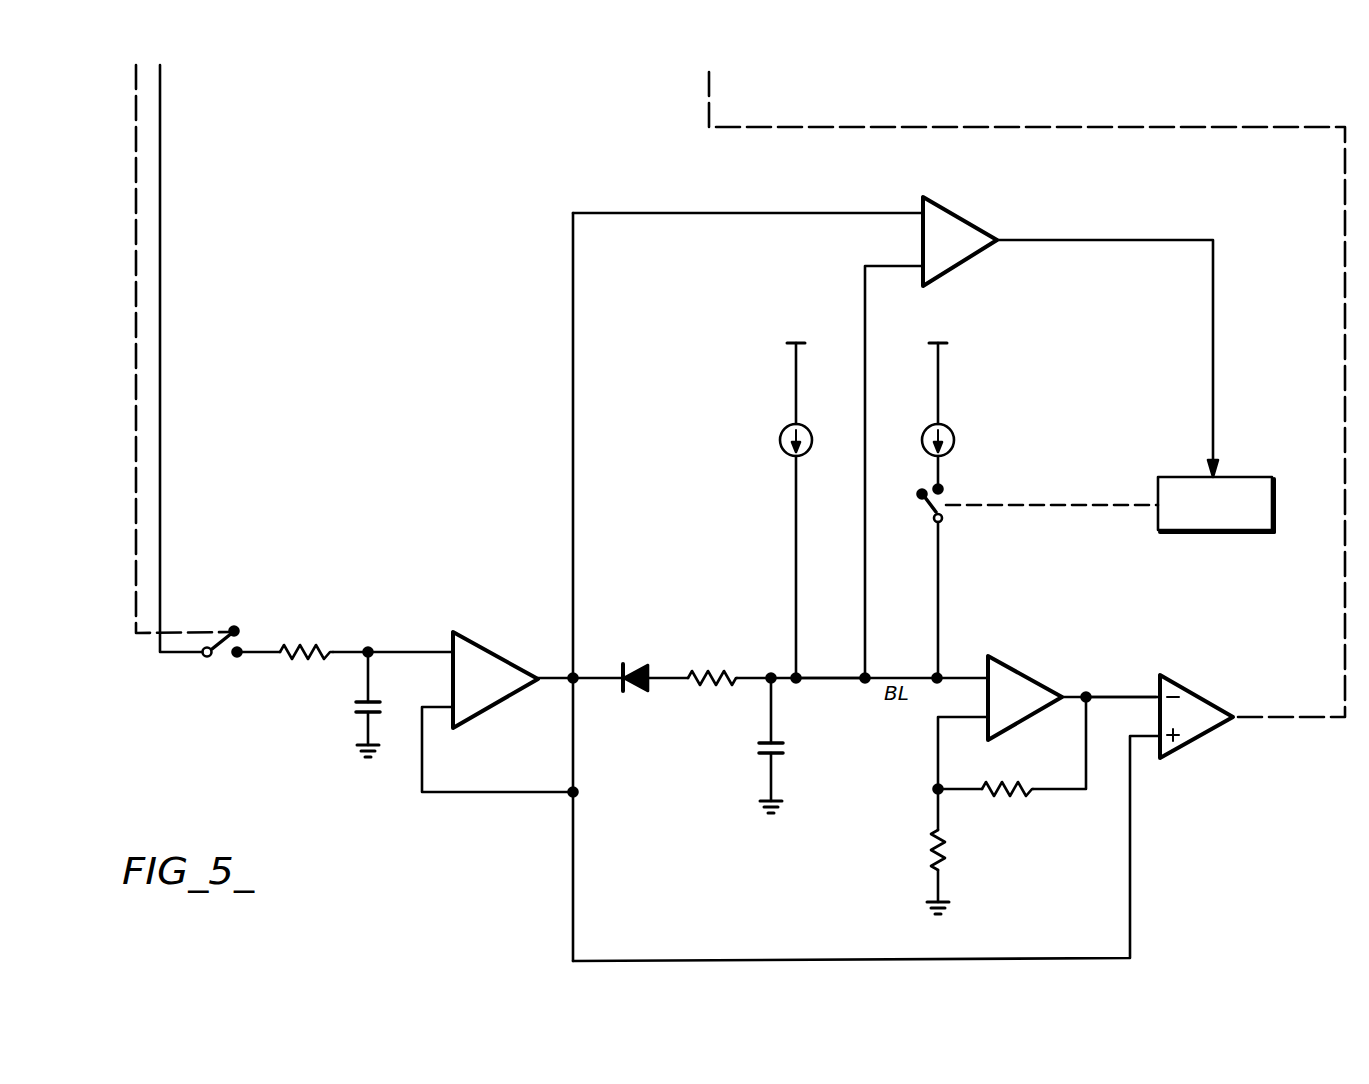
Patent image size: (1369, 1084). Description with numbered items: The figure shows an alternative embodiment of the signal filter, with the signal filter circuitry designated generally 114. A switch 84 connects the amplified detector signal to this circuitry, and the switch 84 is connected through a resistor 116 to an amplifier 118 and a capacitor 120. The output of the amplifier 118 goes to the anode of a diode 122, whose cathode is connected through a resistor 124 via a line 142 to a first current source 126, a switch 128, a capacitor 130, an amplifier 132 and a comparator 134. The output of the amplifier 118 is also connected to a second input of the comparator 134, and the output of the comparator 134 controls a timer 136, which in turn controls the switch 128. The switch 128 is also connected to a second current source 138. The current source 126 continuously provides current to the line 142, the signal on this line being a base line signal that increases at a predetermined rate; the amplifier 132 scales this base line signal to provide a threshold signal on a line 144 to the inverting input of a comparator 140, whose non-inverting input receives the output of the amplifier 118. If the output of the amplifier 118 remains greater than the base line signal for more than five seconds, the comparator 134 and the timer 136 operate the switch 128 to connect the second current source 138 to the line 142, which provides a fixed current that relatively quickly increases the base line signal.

The switch 84 is at (222, 656).
The signal filter circuitry 114 is at (398, 438).
The resistor 116 is at (308, 648).
The amplifier 118 is at (456, 632).
The capacitor 120 is at (356, 706).
The diode 122 is at (628, 666).
The resistor 124 is at (703, 674).
The first current source 126 is at (782, 428).
The switch 128 is at (945, 515).
The capacitor 130 is at (758, 746).
The amplifier 132 is at (1027, 678).
The comparator 134 is at (970, 222).
The timer 136 is at (1248, 477).
The second current source 138 is at (952, 428).
The comparator 140 is at (1217, 702).
The line 142 is at (833, 681).
The line 144 is at (1121, 696).